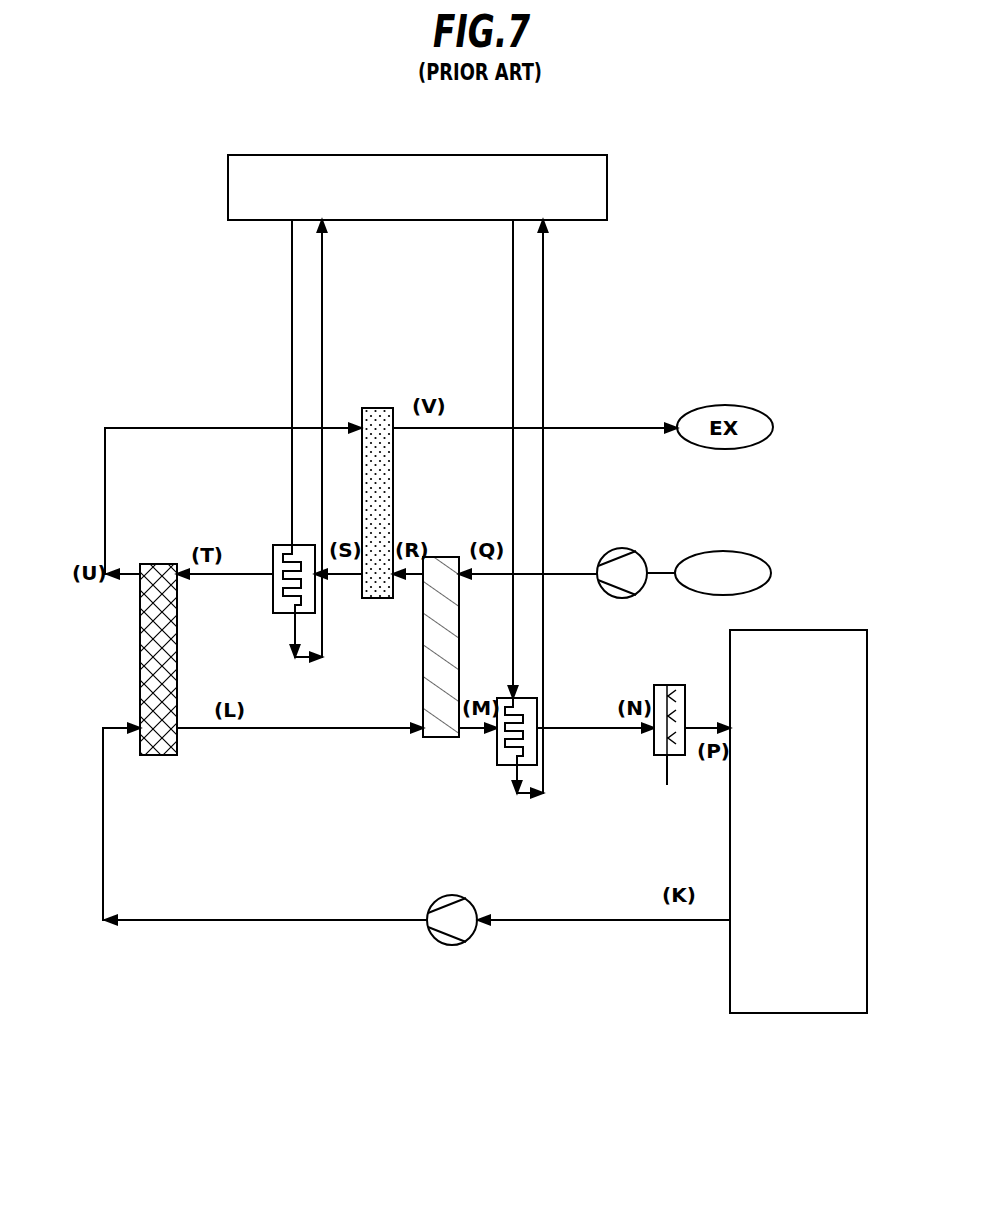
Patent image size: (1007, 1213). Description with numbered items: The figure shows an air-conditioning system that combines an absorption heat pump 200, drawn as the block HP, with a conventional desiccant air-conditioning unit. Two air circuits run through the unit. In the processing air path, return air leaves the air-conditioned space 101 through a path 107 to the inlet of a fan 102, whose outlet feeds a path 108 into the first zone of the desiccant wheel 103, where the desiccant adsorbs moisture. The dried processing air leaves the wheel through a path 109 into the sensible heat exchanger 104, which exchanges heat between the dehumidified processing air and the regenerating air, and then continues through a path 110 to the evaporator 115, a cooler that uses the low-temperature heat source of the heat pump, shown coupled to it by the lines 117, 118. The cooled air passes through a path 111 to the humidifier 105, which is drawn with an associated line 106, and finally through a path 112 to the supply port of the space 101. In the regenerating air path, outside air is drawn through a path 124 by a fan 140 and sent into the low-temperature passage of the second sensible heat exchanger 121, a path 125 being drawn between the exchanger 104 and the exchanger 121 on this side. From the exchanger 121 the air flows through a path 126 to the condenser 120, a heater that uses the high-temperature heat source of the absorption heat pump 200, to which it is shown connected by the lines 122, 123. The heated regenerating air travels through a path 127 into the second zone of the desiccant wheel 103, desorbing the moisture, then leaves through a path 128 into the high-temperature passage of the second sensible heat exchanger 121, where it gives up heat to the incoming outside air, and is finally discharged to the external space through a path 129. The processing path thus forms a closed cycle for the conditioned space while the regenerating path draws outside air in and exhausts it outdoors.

The absorption heat pump 200 is at (268, 155).
The refrigerant pipe 122 is at (292, 387).
The refrigerant return pipe 123 is at (322, 312).
The condenser 120 is at (288, 545).
The second sensible heat exchanger 121 is at (374, 408).
The refrigerant pipe 117 is at (513, 352).
The refrigerant return pipe 118 is at (543, 380).
The path 129 is at (490, 427).
The path 128 is at (105, 460).
The path 127 is at (205, 575).
The path 126 is at (344, 574).
The air passage 125 is at (410, 574).
The fan 140 is at (620, 548).
The path 124 is at (660, 573).
The conditioned room 101 is at (803, 630).
The desiccant wheel 103 is at (140, 648).
The sensible heat exchanger 104 is at (441, 737).
The path 109 is at (313, 728).
The path 110 is at (473, 729).
The evaporator 115 is at (499, 698).
The path 111 is at (565, 729).
The humidifier 105 is at (675, 685).
The water supply pipe 106 is at (667, 783).
The path 112 is at (697, 728).
The fan 102 is at (450, 895).
The path 107 is at (553, 920).
The path 108 is at (182, 920).